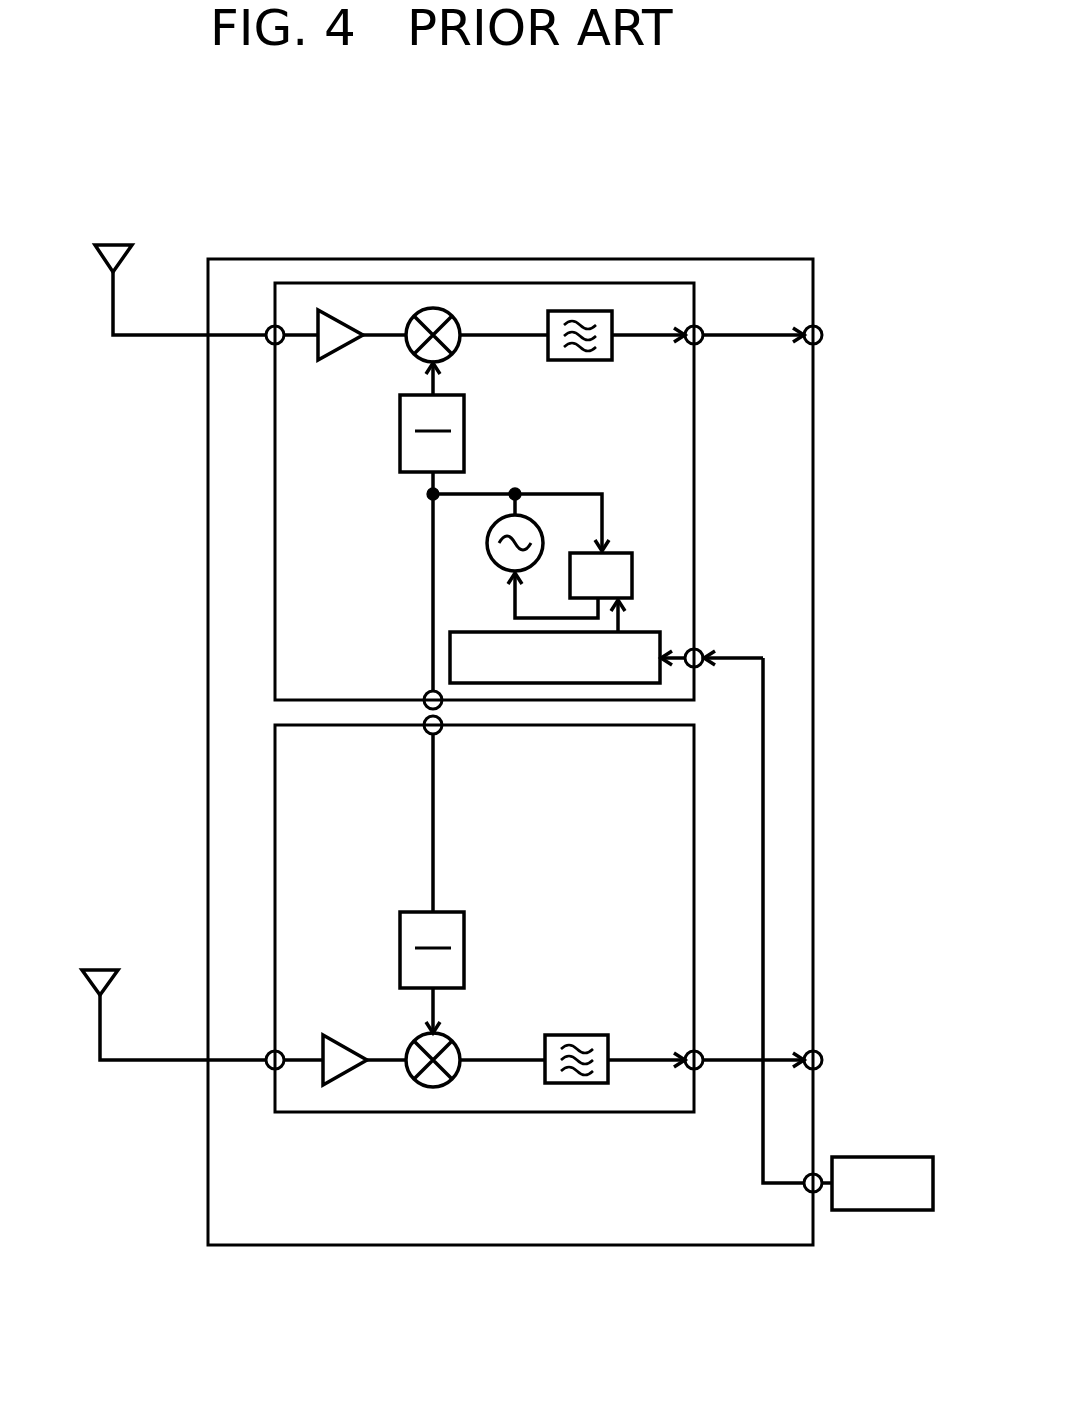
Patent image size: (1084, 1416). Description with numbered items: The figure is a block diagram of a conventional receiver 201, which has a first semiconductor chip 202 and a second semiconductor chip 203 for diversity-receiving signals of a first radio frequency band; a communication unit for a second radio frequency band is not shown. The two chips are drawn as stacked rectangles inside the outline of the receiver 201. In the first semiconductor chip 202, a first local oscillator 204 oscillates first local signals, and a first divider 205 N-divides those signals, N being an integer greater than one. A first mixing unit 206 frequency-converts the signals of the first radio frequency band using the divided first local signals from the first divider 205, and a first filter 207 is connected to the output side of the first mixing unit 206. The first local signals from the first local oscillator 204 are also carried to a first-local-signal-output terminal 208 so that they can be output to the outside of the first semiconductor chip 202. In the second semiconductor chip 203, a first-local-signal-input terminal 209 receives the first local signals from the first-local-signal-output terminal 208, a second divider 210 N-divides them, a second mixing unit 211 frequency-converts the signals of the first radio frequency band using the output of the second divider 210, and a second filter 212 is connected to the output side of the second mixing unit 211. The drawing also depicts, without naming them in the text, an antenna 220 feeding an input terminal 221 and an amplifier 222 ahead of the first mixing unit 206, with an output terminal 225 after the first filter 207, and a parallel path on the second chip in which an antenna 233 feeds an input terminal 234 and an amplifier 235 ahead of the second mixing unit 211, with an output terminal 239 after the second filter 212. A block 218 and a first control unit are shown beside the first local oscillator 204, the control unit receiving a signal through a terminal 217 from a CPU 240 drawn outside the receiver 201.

The conventional receiver 201 is at (157, 183).
The first semiconductor chip 202 is at (275, 588).
The second semiconductor chip 203 is at (275, 765).
The first local oscillator 204 is at (493, 567).
The first divider 205 is at (400, 416).
The first mixing unit 206 is at (433, 308).
The first filter 207 is at (583, 311).
The first-local-signal-output terminal 208 is at (425, 690).
The first-local-signal-input terminal 209 is at (425, 733).
The second divider 210 is at (400, 925).
The second mixing unit 211 is at (430, 1088).
The second filter 212 is at (585, 1083).
The control terminal / first control unit 217 is at (647, 630).
The PLL circuit 218 is at (620, 552).
The antenna 220 is at (115, 242).
The input terminal 221 is at (270, 323).
The amplifier 222 is at (338, 317).
The output terminal 225 is at (690, 325).
The antenna 233 is at (95, 968).
The input terminal 234 is at (267, 1067).
The amplifier 235 is at (327, 1085).
The output terminal 239 is at (690, 1072).
The CPU 240 is at (888, 1213).